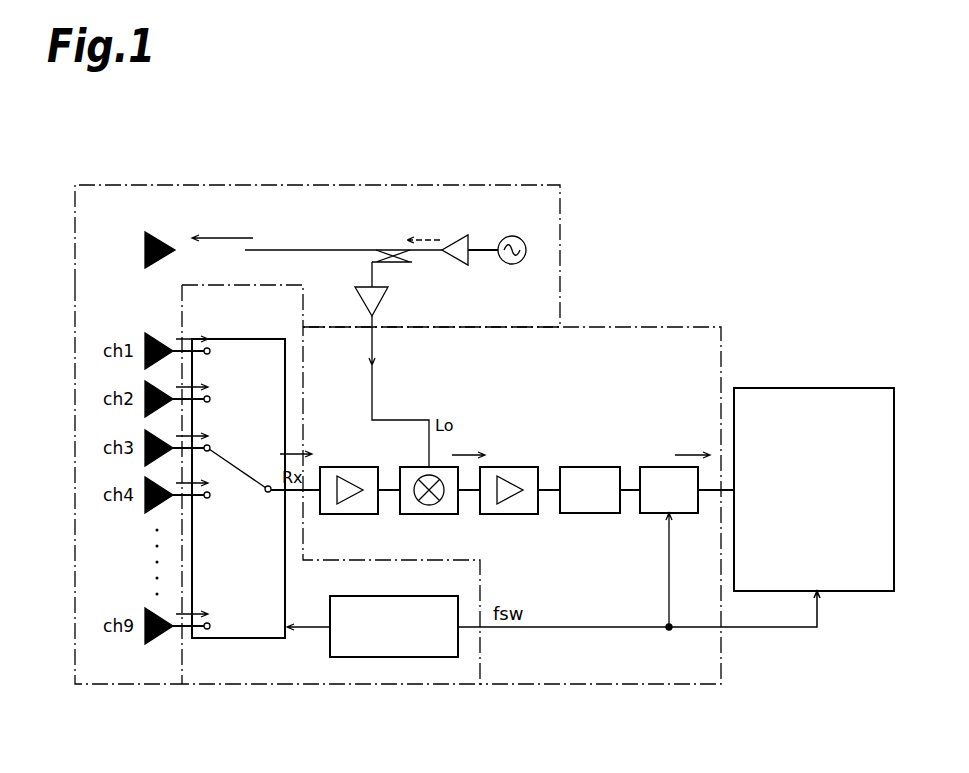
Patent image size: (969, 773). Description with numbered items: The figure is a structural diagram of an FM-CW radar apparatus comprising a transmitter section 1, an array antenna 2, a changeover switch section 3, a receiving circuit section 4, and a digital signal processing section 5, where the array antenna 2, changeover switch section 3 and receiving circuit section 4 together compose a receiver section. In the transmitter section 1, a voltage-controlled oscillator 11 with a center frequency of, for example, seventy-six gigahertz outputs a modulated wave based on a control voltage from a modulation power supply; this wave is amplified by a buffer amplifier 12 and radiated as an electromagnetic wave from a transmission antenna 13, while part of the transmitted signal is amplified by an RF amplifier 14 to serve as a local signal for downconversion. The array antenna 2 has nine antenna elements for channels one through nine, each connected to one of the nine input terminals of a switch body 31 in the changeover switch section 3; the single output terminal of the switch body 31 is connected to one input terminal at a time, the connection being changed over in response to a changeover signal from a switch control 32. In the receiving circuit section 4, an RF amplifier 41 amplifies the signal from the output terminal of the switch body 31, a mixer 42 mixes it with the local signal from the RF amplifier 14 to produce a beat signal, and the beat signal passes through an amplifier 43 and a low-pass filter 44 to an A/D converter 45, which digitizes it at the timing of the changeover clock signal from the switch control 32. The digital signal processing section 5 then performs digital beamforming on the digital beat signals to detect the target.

The transmitter section 1 is at (330, 185).
The array antenna 2 is at (130, 684).
The changeover switch section 3 is at (253, 684).
The receiving circuit section 4 is at (606, 327).
The digital signal processing section 5 is at (808, 388).
The voltage-controlled oscillator 11 is at (513, 264).
The buffer amplifier 12 is at (446, 238).
The transmission antenna 13 is at (173, 234).
The RF amplifier 14 is at (388, 296).
The switch body 31 is at (245, 639).
The switch control 32 is at (375, 597).
The RF amplifier 41 is at (363, 514).
The mixer 42 is at (440, 514).
The amplifier 43 is at (520, 514).
The filter 44 is at (586, 513).
The A/D converter 45 is at (650, 514).